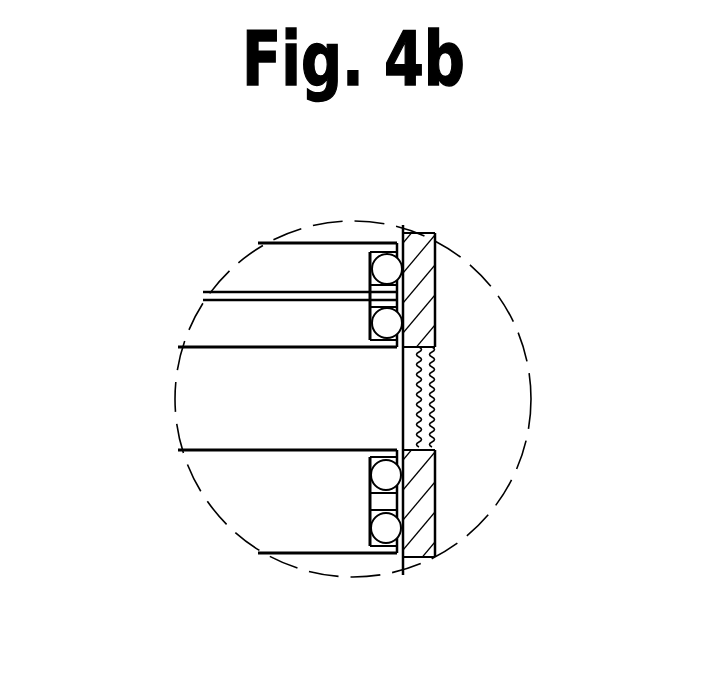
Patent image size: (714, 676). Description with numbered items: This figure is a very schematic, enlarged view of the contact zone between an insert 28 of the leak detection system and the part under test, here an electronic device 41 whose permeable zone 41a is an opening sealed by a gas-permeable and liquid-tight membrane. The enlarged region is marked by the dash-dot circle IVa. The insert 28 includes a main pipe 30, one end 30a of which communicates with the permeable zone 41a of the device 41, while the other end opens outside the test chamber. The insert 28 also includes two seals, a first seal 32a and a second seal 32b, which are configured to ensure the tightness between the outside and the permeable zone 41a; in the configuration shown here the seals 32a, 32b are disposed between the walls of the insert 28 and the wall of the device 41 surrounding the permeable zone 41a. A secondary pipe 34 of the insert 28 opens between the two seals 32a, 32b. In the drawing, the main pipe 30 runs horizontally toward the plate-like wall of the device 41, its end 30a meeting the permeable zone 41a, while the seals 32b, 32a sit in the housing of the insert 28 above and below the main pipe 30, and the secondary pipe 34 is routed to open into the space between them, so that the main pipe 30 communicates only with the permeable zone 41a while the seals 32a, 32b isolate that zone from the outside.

The insert 28 is at (275, 270).
The main pipe 30 is at (222, 402).
The end of the main pipe 30a is at (386, 382).
The first seal 32a is at (386, 528).
The second seal 32b is at (385, 270).
The secondary pipe 34 is at (170, 286).
The electronic device 41 is at (425, 278).
The permeable zone 41a is at (435, 410).
The detail region IVa is at (197, 488).